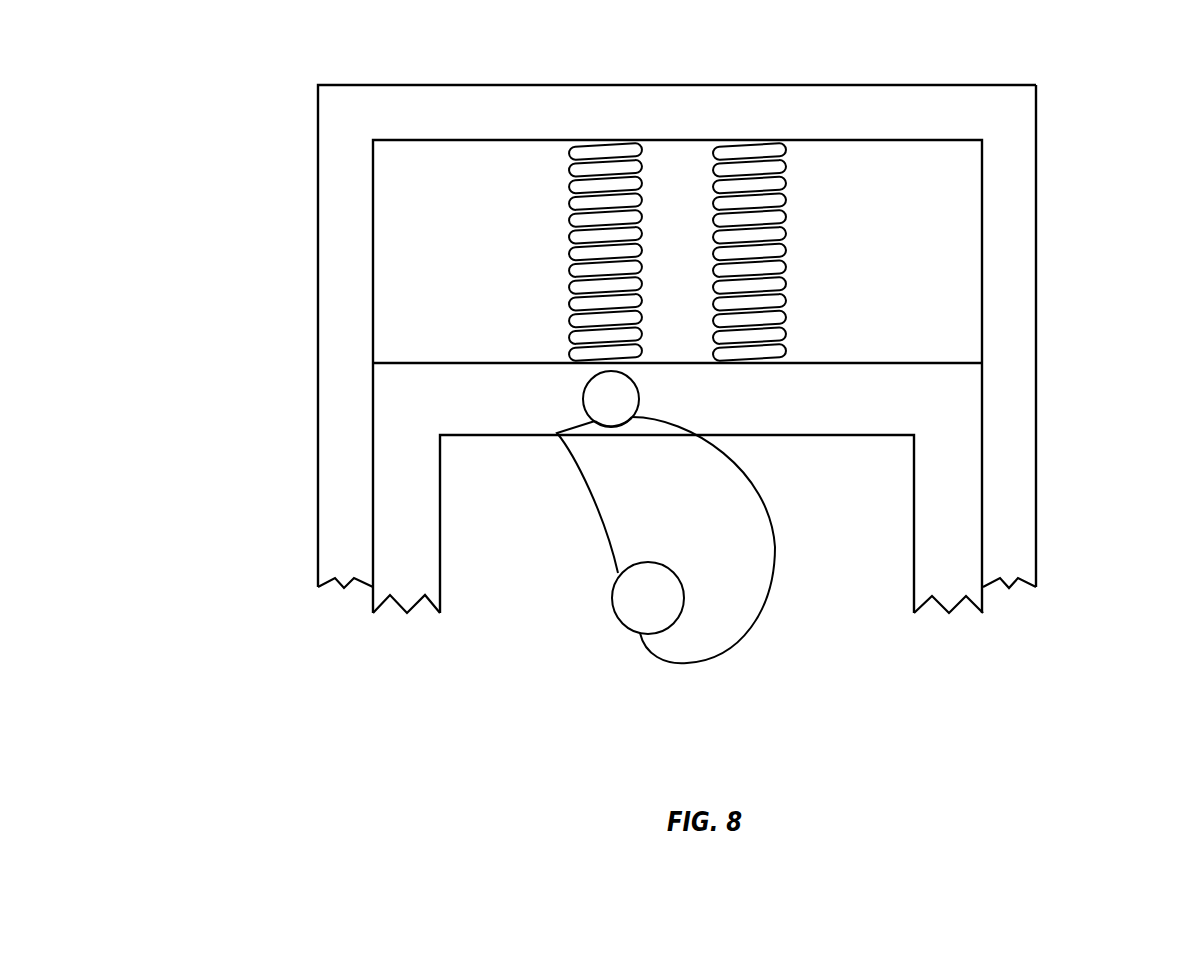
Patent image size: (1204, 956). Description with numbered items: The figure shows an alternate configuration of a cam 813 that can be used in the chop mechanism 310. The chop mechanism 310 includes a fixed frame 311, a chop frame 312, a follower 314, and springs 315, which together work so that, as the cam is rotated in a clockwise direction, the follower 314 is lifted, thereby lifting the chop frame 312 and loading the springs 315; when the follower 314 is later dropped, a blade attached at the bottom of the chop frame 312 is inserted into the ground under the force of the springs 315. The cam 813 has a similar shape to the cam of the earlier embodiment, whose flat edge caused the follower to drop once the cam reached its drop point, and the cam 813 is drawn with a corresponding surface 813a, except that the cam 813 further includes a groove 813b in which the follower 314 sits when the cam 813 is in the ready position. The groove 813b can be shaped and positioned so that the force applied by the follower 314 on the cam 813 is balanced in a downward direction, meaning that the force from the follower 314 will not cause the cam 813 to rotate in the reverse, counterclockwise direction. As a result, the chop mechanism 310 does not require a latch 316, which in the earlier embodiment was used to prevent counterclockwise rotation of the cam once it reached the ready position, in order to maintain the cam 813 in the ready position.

The chop mechanism 310 is at (268, 118).
The fixed frame 311 is at (1036, 243).
The chop frame 312 is at (983, 568).
The follower 314 is at (583, 396).
The springs 315 is at (568, 252).
The latch 316 is at (787, 247).
The cam 813 is at (769, 598).
The cam surface 813a is at (608, 532).
The groove 813b is at (603, 425).